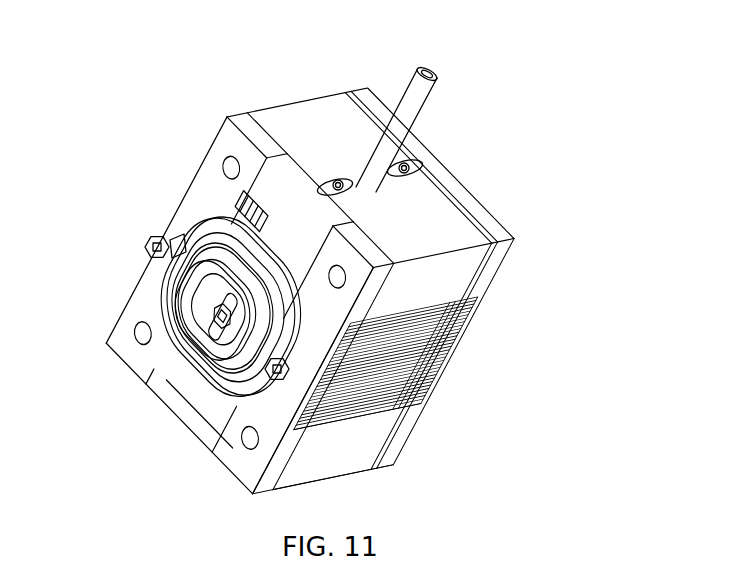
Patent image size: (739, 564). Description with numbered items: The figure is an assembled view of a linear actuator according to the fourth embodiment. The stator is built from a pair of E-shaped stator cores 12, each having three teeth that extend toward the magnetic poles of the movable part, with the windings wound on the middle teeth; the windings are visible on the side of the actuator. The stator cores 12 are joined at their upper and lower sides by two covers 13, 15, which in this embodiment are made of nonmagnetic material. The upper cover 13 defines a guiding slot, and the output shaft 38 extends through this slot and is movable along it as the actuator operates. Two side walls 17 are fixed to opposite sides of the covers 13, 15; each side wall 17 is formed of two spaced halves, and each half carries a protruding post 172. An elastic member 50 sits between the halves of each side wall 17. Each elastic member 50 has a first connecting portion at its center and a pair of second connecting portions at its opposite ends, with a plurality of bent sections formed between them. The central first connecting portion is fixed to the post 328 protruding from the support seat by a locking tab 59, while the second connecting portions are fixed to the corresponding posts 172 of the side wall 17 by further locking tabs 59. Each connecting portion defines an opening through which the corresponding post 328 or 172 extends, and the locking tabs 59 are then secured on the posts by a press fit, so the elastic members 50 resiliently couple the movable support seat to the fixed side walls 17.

The stator core 12 is at (445, 368).
The cover 13 is at (430, 207).
The cover 15 is at (368, 440).
The side wall 17 is at (218, 150).
The output shaft 38 is at (412, 105).
The elastic member 50 is at (153, 290).
The locking tab 59 is at (164, 230).
The post 172 is at (147, 250).
The post 328 is at (213, 311).